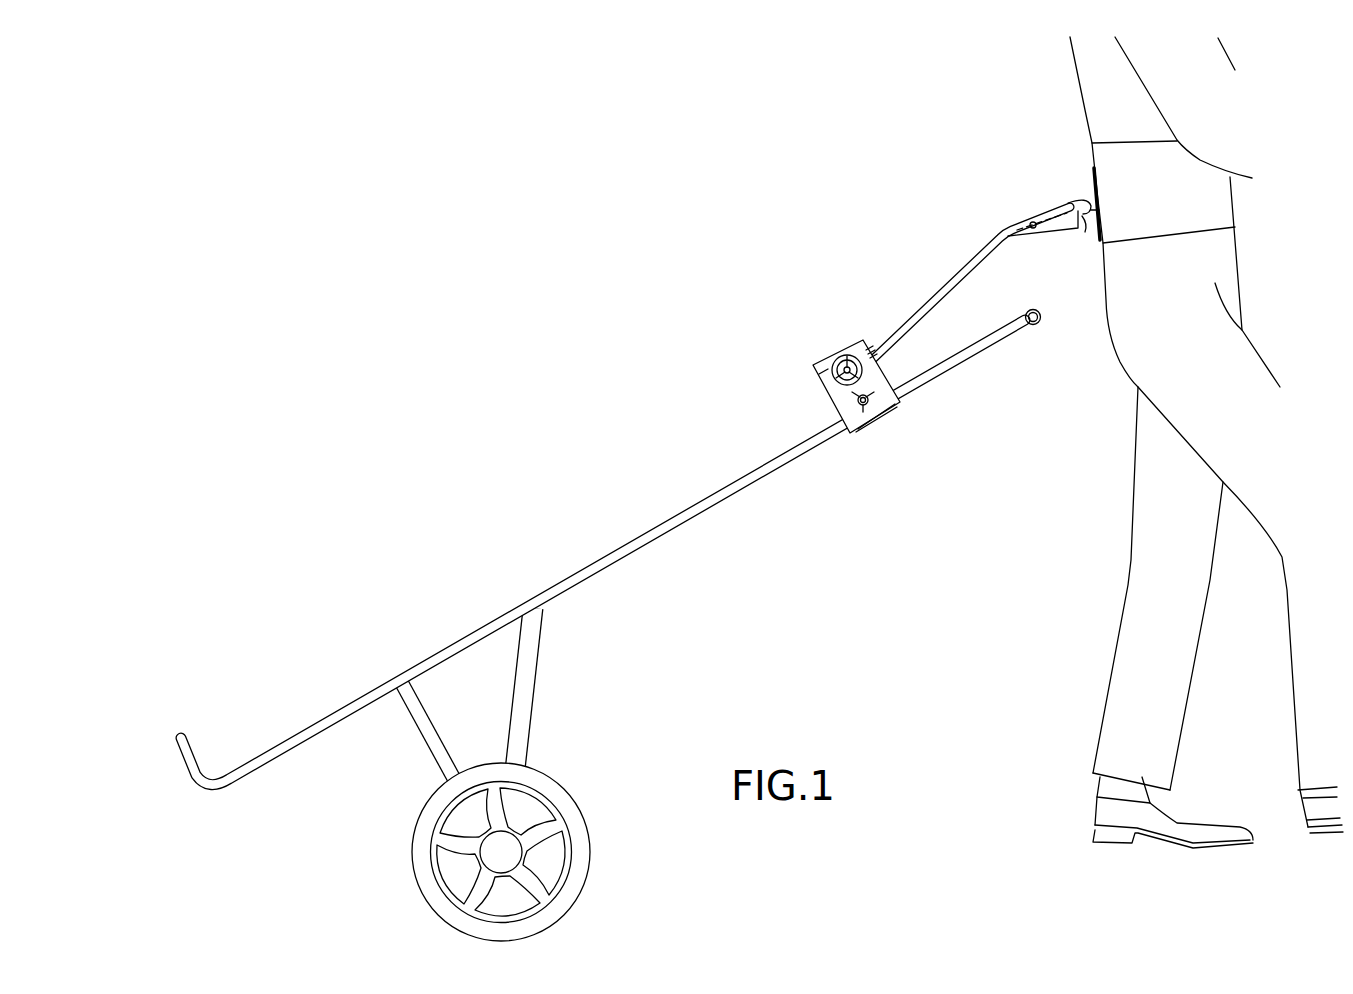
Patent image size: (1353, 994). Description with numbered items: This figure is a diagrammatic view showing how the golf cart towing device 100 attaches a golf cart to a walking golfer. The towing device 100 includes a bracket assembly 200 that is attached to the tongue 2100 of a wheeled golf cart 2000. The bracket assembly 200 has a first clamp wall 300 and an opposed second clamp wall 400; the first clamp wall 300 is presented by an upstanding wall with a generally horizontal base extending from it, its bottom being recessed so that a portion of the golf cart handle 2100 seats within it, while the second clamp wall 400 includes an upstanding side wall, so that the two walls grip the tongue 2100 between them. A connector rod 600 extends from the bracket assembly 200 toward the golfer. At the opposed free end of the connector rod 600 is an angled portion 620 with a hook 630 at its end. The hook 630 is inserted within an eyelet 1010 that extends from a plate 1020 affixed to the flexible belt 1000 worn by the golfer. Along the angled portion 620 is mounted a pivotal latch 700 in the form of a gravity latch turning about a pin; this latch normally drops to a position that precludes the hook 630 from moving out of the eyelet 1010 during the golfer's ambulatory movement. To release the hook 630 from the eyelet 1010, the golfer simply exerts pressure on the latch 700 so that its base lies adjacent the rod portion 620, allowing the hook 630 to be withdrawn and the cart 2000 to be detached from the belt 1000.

The towing device 100 is at (871, 315).
The bracket assembly 200 is at (800, 348).
The first clamp wall 300 is at (815, 401).
The second clamp wall 400 is at (849, 440).
The connector rod 600 is at (962, 278).
The angled portion 620 is at (1018, 228).
The hook 630 is at (1088, 201).
The pivotal latch 700 is at (1010, 246).
The flexible belt 1000 is at (1068, 158).
The eyelet 1010 is at (1088, 232).
The plate 1020 is at (1098, 185).
The wheeled golf cart 2000 is at (568, 479).
The tongue 2100 is at (684, 524).